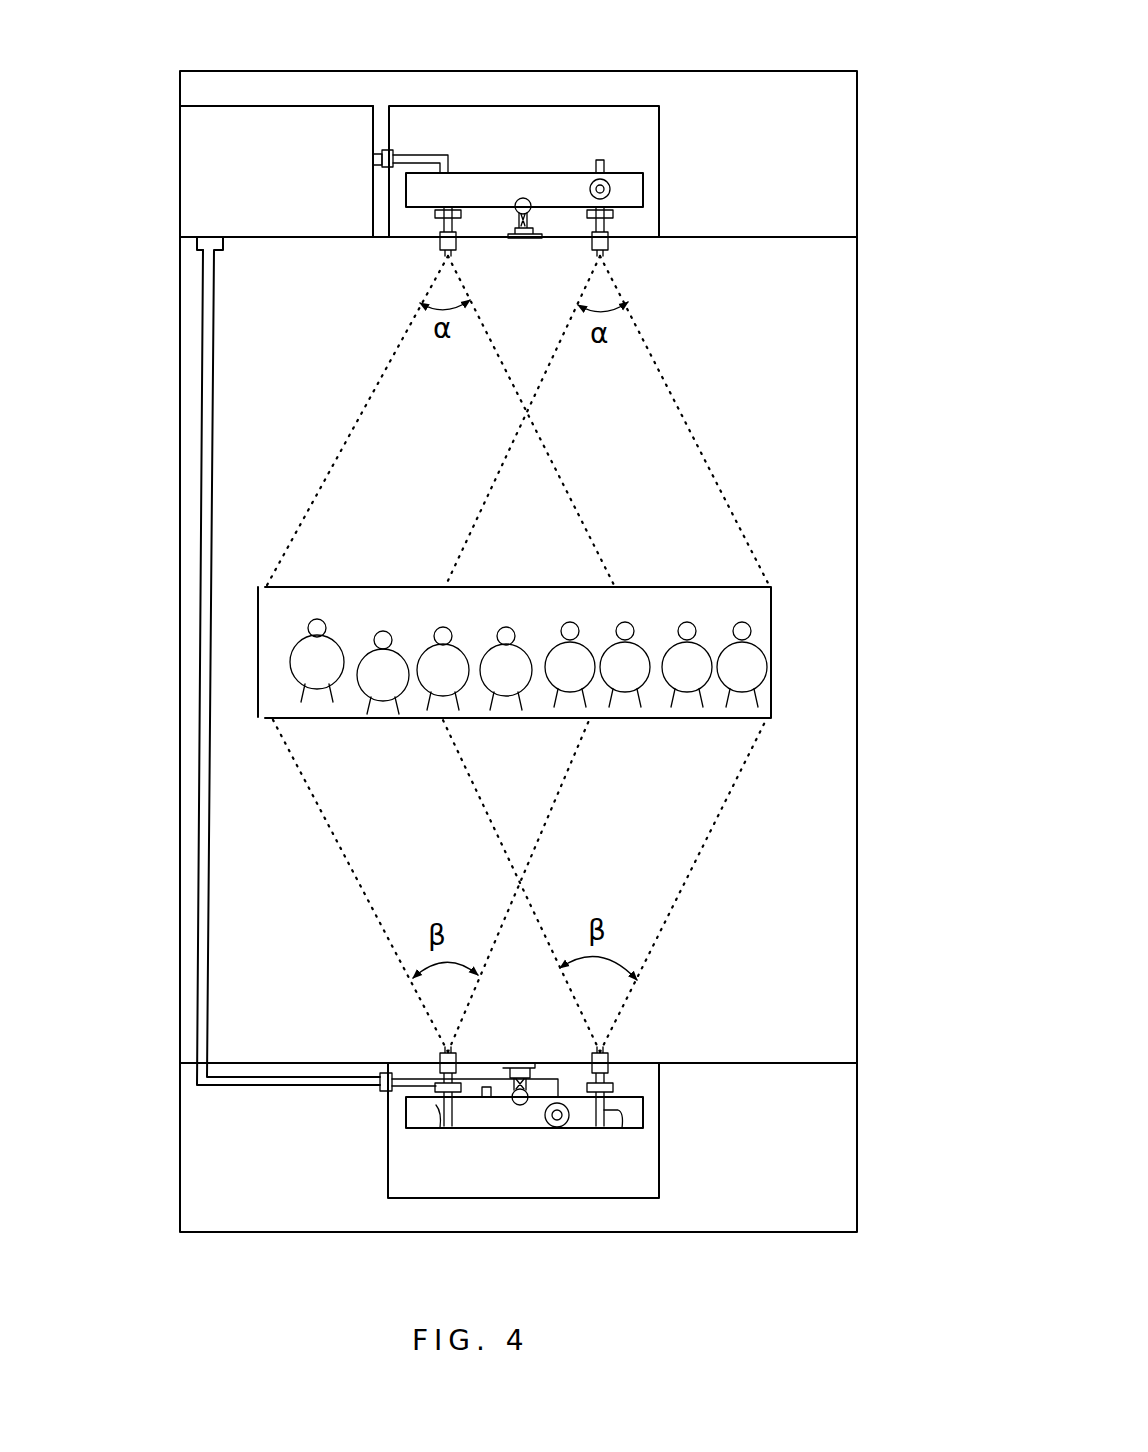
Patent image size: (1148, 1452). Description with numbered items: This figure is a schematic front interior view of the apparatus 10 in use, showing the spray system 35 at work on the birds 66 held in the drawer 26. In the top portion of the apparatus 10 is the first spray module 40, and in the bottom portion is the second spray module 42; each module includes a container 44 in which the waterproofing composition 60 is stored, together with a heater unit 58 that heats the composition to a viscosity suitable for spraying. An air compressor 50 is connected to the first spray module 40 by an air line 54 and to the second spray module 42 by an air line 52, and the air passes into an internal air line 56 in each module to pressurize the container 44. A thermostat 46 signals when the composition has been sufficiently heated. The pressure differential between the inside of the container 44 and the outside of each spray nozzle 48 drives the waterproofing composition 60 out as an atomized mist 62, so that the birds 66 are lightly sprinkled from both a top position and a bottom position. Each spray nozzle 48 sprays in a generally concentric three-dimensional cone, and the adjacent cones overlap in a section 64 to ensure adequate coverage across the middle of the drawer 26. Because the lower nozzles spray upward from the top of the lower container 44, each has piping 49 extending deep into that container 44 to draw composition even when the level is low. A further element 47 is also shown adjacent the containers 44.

The apparatus 10 is at (745, 50).
The drawer 26 is at (253, 657).
The spray system 35 is at (165, 232).
The first spray module 40 is at (500, 98).
The second spray module 42 is at (395, 1200).
The container 44 is at (518, 172).
The thermostat 46 is at (612, 190).
The sensor lead 47 is at (600, 160).
The spray nozzle 48 is at (440, 243).
The piping 49 is at (442, 1113).
The air compressor 50 is at (280, 104).
The air line 52 is at (214, 338).
The air line 54 is at (377, 154).
The internal air line 56 is at (413, 152).
The heater unit 58 is at (524, 240).
The waterproofing composition 60 is at (350, 430).
The atomized mist 62 is at (400, 510).
The overlap section 64 is at (548, 540).
The birds 66 is at (430, 648).